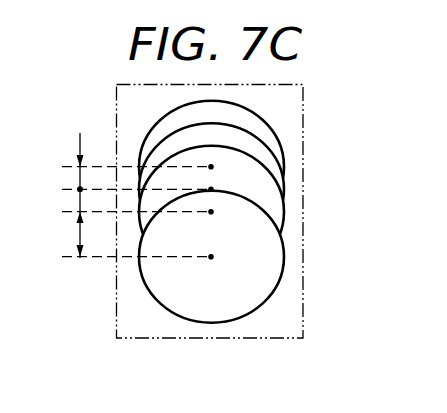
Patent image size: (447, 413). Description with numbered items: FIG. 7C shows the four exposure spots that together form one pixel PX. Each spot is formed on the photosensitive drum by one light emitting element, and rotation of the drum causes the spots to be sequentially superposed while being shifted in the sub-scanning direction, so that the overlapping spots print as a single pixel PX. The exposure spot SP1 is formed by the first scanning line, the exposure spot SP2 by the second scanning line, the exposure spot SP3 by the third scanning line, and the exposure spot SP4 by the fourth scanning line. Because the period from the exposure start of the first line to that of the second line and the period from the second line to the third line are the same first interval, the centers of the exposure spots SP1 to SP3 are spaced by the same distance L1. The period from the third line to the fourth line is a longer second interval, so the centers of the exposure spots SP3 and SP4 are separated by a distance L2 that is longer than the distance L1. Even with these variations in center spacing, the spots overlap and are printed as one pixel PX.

The pixel PX is at (116, 103).
The exposure spot formed by the first scanning line SP1 is at (277, 134).
The exposure spot formed by the second scanning line SP2 is at (283, 185).
The exposure spot formed by the third scanning line SP3 is at (284, 214).
The exposure spot formed by the fourth scanning line SP4 is at (283, 262).
The distance between centers of the first to third exposure spots L1 is at (61, 178).
The distance between centers of the third and fourth exposure spots L2 is at (61, 235).